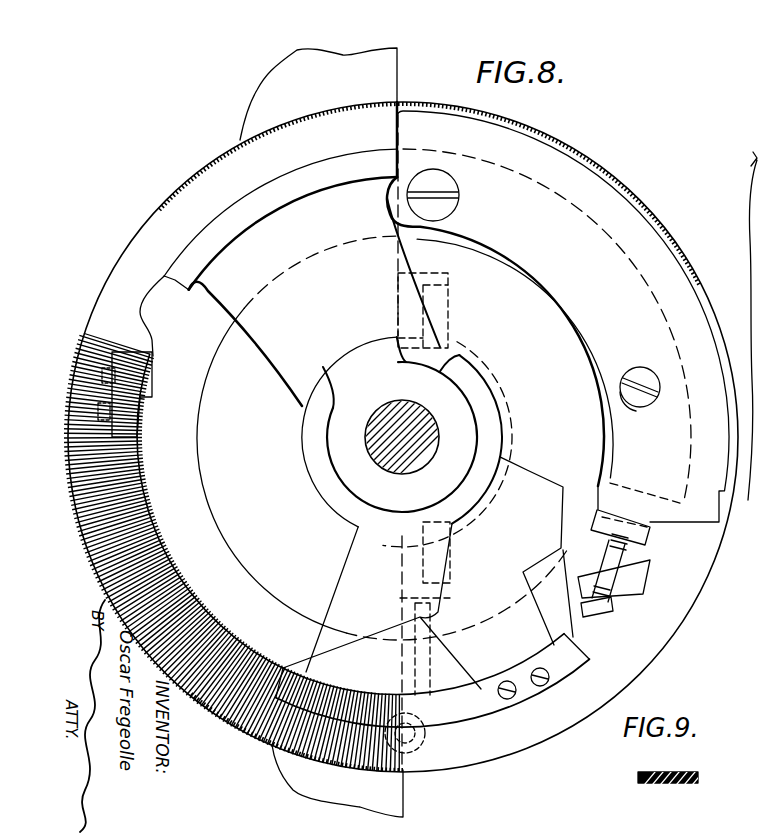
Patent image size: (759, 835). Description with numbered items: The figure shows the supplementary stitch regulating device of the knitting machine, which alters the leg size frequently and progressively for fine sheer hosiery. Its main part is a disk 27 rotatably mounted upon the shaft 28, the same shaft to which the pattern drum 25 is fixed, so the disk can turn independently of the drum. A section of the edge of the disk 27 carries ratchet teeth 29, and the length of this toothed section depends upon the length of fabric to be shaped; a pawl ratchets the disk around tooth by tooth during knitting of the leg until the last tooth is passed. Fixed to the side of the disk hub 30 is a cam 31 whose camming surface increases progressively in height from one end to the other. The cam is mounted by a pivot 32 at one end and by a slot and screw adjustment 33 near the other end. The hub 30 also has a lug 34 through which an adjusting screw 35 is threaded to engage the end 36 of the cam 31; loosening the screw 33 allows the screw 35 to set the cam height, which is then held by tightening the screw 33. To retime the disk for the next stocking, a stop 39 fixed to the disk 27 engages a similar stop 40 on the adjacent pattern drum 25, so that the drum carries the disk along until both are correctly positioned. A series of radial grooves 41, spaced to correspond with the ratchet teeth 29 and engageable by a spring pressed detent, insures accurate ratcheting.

In FIG. 8, the pattern drum 25 is at (756, 148).
In FIG. 8, the disk 27 is at (660, 632).
In FIG. 8, the shaft 28 is at (392, 466).
In FIG. 8, the ratchet teeth 29 is at (542, 138).
In FIG. 8, the disk hub 30 is at (401, 436).
In FIG. 8, the cam 31 is at (678, 303).
In FIG. 8, the pivot 32 is at (452, 206).
In FIG. 8, the slot and screw adjustment 33 is at (647, 367).
In FIG. 8, the lug 34 is at (640, 575).
In FIG. 8, the adjusting screw 35 is at (610, 610).
In FIG. 8, the end of cam 36 is at (640, 540).
In FIG. 8, the stop 39 is at (137, 397).
In FIG. 8, the stop 40 is at (527, 693).
In FIG. 8, the radial grooves 41 is at (175, 697).
In FIG. 9, the radial grooves 41 is at (697, 778).